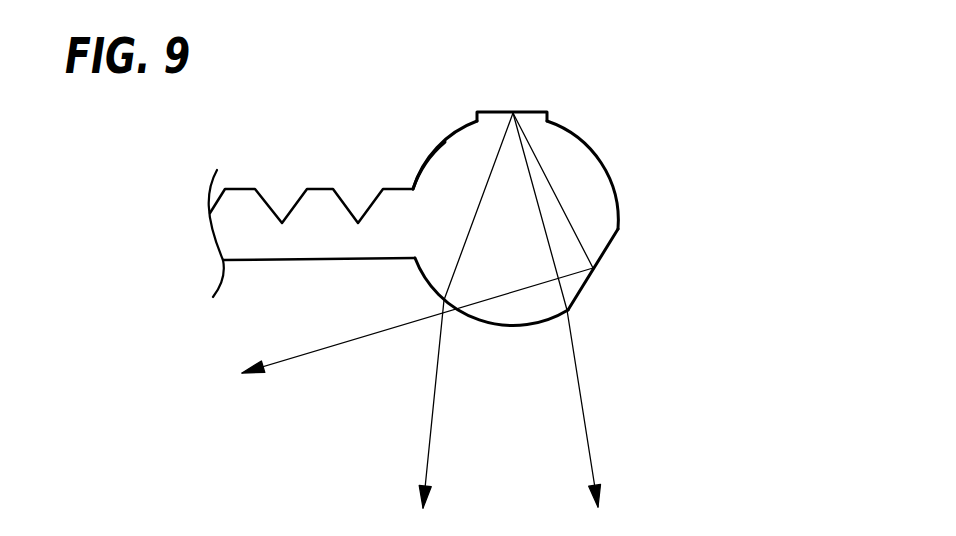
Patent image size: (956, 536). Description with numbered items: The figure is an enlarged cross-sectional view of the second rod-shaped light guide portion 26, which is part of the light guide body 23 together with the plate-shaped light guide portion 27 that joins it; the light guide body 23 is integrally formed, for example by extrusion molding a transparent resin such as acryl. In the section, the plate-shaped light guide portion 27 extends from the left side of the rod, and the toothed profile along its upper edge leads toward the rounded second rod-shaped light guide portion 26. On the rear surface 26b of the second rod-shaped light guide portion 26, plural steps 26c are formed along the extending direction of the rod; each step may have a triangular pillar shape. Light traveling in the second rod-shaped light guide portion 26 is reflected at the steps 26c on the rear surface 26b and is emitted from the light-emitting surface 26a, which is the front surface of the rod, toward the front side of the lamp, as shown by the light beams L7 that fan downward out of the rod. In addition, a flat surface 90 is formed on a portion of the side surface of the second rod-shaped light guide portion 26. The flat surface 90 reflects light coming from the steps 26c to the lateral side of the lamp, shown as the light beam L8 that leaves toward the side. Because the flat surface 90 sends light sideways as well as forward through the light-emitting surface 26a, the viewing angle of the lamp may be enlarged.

The light guide body 23 is at (322, 187).
The second rod-shaped light guide portion 26 is at (539, 218).
The light-emitting surface 26a is at (515, 327).
The rear surface 26b is at (440, 138).
The steps 26c is at (497, 110).
The plate-shaped light guide portion 27 is at (270, 260).
The flat surface 90 is at (607, 248).
The light beams L7 is at (430, 437).
The light beam L8 is at (302, 362).